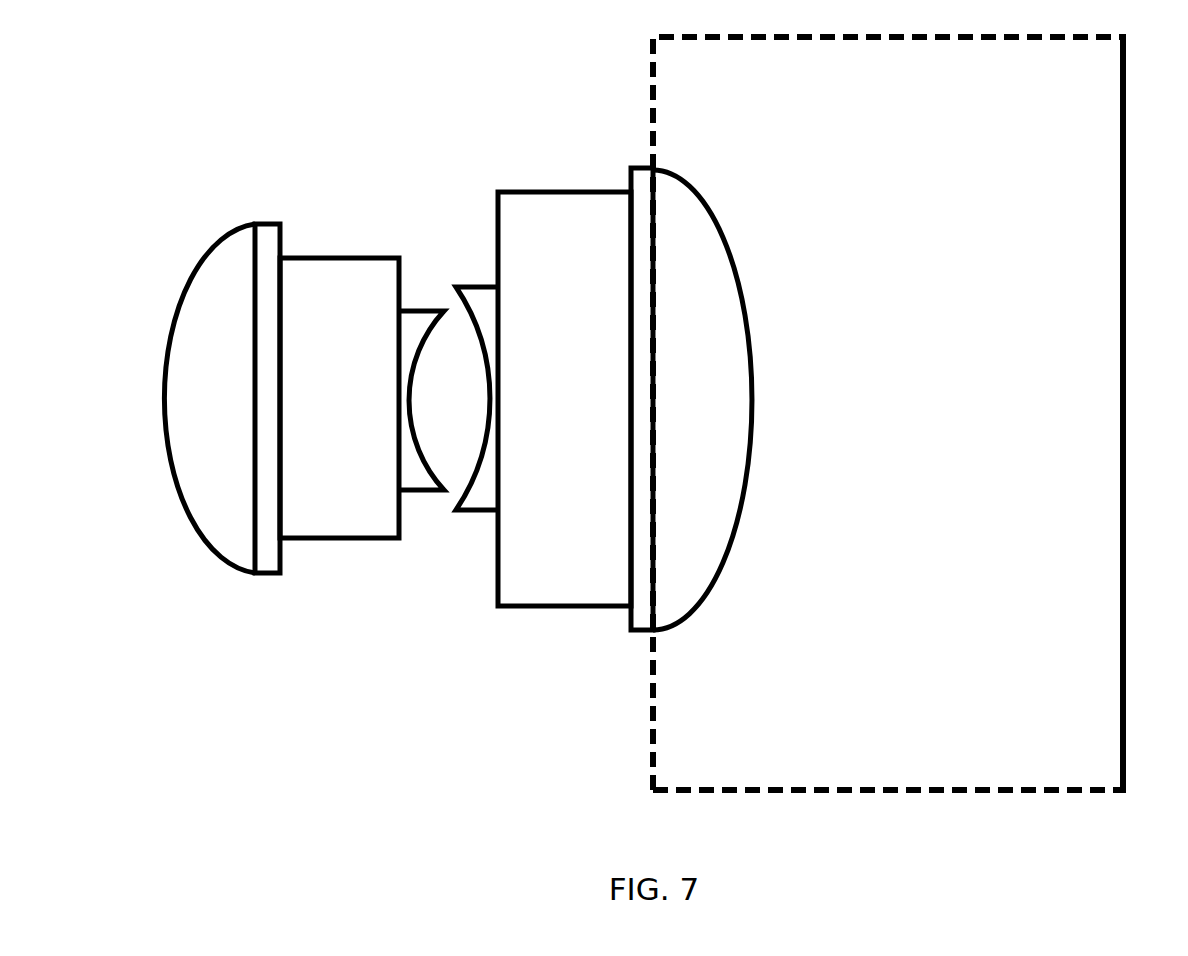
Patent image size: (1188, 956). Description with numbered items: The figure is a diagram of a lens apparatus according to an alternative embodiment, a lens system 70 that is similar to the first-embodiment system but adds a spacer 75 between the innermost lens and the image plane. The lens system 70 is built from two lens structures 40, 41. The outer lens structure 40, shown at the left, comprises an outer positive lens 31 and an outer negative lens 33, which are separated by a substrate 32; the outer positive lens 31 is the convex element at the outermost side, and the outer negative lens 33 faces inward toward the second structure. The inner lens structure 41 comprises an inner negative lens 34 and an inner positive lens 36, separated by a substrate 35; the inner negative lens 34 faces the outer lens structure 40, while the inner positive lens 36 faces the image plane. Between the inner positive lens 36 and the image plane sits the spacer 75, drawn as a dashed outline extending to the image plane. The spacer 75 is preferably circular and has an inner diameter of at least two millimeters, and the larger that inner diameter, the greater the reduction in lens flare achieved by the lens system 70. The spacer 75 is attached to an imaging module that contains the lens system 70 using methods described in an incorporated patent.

The lens system 70 is at (408, 337).
The outer lens structure 40 is at (254, 378).
The inner lens structure 41 is at (584, 360).
The outer positive lens 31 is at (204, 384).
The substrate 32 is at (336, 384).
The outer negative lens 33 is at (411, 483).
The inner negative lens 34 is at (466, 284).
The substrate 35 is at (546, 374).
The inner positive lens 36 is at (688, 384).
The spacer 75 is at (650, 778).